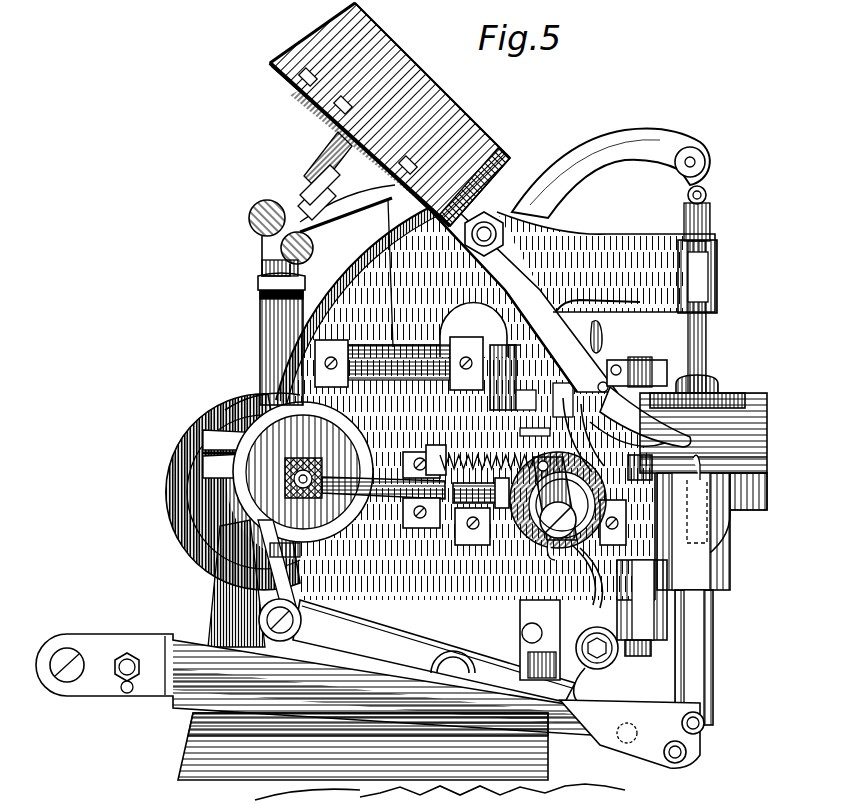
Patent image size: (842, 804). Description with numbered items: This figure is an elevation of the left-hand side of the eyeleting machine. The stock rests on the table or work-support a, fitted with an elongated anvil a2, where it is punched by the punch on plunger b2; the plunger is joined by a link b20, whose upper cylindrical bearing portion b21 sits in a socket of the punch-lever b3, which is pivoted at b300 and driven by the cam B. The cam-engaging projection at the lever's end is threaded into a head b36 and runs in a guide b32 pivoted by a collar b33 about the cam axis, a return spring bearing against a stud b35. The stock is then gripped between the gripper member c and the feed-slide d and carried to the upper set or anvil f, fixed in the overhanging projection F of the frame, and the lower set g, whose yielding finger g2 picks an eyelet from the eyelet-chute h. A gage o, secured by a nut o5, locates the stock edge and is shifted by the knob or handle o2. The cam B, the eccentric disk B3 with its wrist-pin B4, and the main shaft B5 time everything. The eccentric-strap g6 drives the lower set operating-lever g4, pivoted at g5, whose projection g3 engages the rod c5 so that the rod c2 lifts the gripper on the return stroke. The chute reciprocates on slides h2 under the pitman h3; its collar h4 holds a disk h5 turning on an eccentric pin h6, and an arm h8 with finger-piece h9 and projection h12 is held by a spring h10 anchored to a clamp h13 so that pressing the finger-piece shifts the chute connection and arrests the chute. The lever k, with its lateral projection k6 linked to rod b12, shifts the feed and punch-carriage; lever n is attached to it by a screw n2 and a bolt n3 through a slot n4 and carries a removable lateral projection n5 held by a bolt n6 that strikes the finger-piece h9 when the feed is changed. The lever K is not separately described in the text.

The eyelet-chute h is at (527, 303).
The punch-lever b3 is at (611, 174).
The overhanging projection of the frame F is at (655, 255).
The pivot of punch-lever b300 is at (500, 236).
The upper cylindrical bearing portion of link b21 is at (693, 160).
The link b20 is at (708, 190).
The plunger b2 is at (712, 222).
The upper set or anvil f is at (706, 345).
The gripper member c is at (706, 370).
The table or work-support a is at (766, 396).
The feed-slide d is at (722, 398).
The yielding finger g2 is at (702, 468).
The knob or handle o2 is at (602, 337).
The gage o is at (672, 378).
The nut o5 is at (640, 360).
The projection from arm h8 h12 is at (530, 455).
The link or rod b12 is at (530, 395).
The anvil a2 is at (530, 432).
The slides h2 is at (348, 362).
The cam B is at (195, 488).
The collar b33 is at (233, 412).
The eccentric disk B3 is at (303, 472).
The wrist-pin B4 is at (325, 498).
The main shaft B5 is at (308, 490).
The guide b32 is at (262, 338).
The stud b35 is at (260, 296).
The head b36 is at (260, 280).
The pitman h3 is at (410, 483).
The clamp h13 is at (429, 451).
The spring h10 is at (487, 450).
The collar h4 is at (420, 528).
The disk h5 is at (558, 500).
The arm h8 is at (510, 548).
The pin h6 is at (556, 548).
The finger-piece h9 is at (596, 575).
The rod c2 is at (628, 465).
The eccentric-strap g6 is at (302, 556).
The lower set operating-lever g4 is at (417, 650).
The pivot of lower set lever g5 is at (439, 660).
The lateral projection k6 is at (523, 640).
The lever K is at (202, 642).
The screw n2 is at (78, 650).
The supplemental bolt or screw n3 is at (130, 655).
The slot n4 is at (126, 693).
The lower set g is at (705, 652).
The rod c5 is at (640, 658).
The lateral projection n5 is at (606, 666).
The bolt n6 is at (600, 690).
The lever n is at (605, 715).
The projection g3 is at (640, 760).
The lever k is at (640, 790).